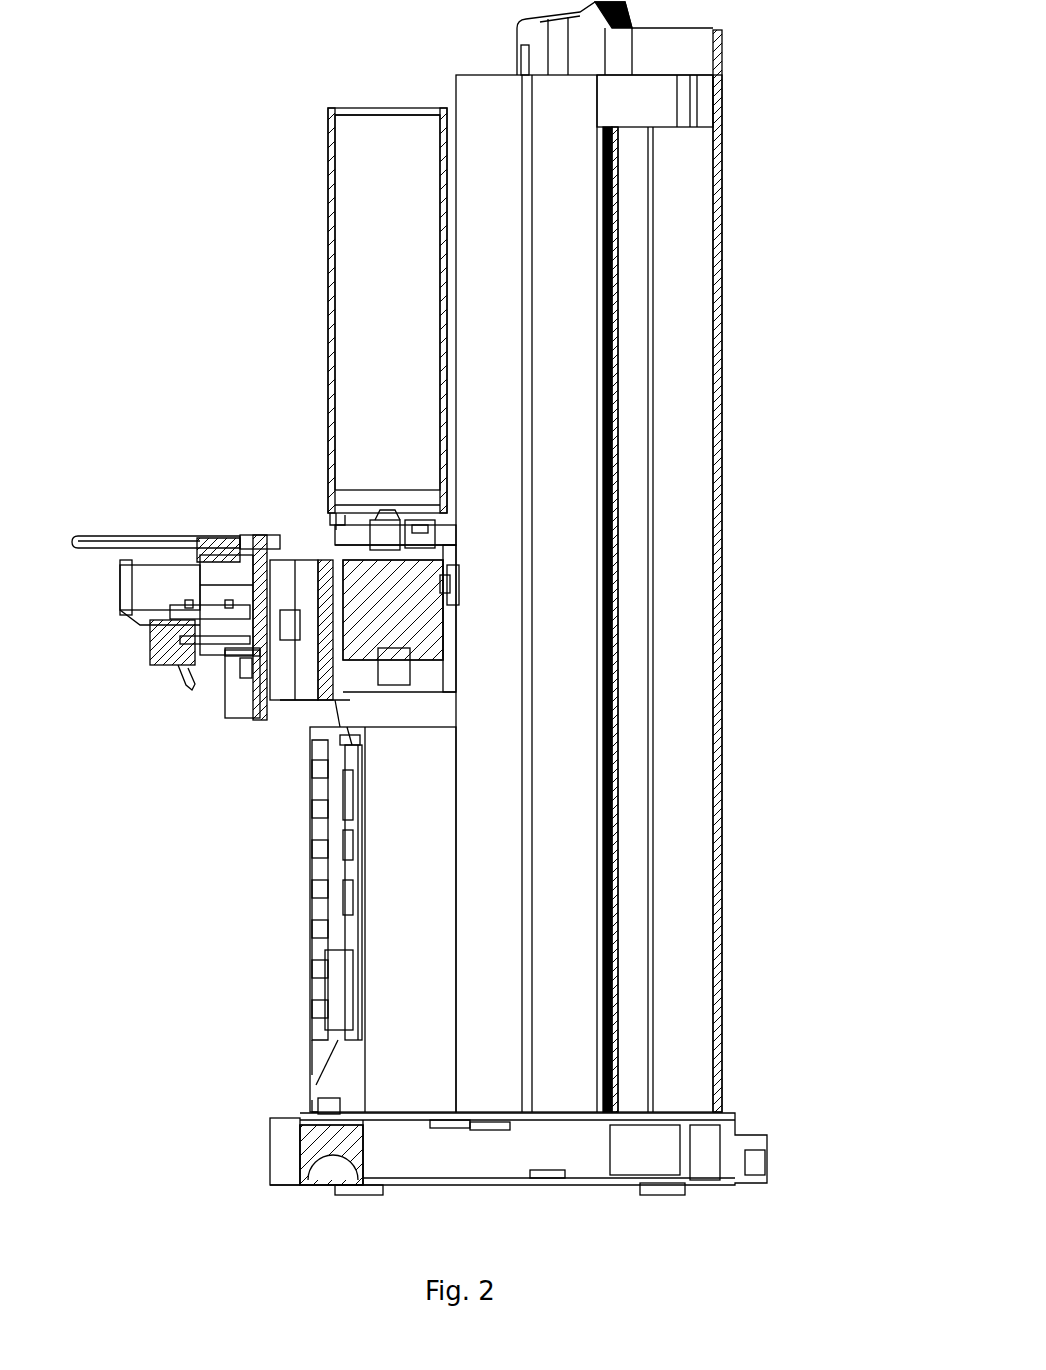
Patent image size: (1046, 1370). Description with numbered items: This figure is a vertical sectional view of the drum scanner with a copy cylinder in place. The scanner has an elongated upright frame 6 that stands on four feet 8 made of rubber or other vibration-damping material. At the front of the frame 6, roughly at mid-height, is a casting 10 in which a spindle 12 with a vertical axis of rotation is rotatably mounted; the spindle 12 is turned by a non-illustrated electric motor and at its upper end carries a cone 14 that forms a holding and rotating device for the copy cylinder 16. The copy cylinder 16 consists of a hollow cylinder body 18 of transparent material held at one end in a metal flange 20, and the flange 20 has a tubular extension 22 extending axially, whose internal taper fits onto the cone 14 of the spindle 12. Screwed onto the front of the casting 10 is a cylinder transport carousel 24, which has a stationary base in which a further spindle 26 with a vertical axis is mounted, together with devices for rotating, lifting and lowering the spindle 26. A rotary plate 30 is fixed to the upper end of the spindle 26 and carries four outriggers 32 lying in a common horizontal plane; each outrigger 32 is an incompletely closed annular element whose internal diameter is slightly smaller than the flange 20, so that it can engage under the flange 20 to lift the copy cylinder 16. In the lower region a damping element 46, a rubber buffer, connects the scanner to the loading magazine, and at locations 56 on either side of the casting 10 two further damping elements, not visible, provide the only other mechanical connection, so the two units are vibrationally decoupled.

The frame 6 is at (685, 600).
The feet 8 is at (380, 1198).
The casting 10 is at (320, 640).
The spindle 12 is at (405, 625).
The cone 14 is at (392, 528).
The copy cylinder 16 is at (375, 285).
The hollow cylinder body 18 is at (328, 175).
The flange 20 is at (328, 512).
The tubular extension 22 is at (416, 528).
The cylinder transport carousel 24 is at (160, 590).
The spindle 26 is at (258, 537).
The rotary plate 30 is at (218, 538).
The outrigger 32 is at (130, 538).
The damping element 46 is at (318, 1110).
The locations 56 is at (459, 580).